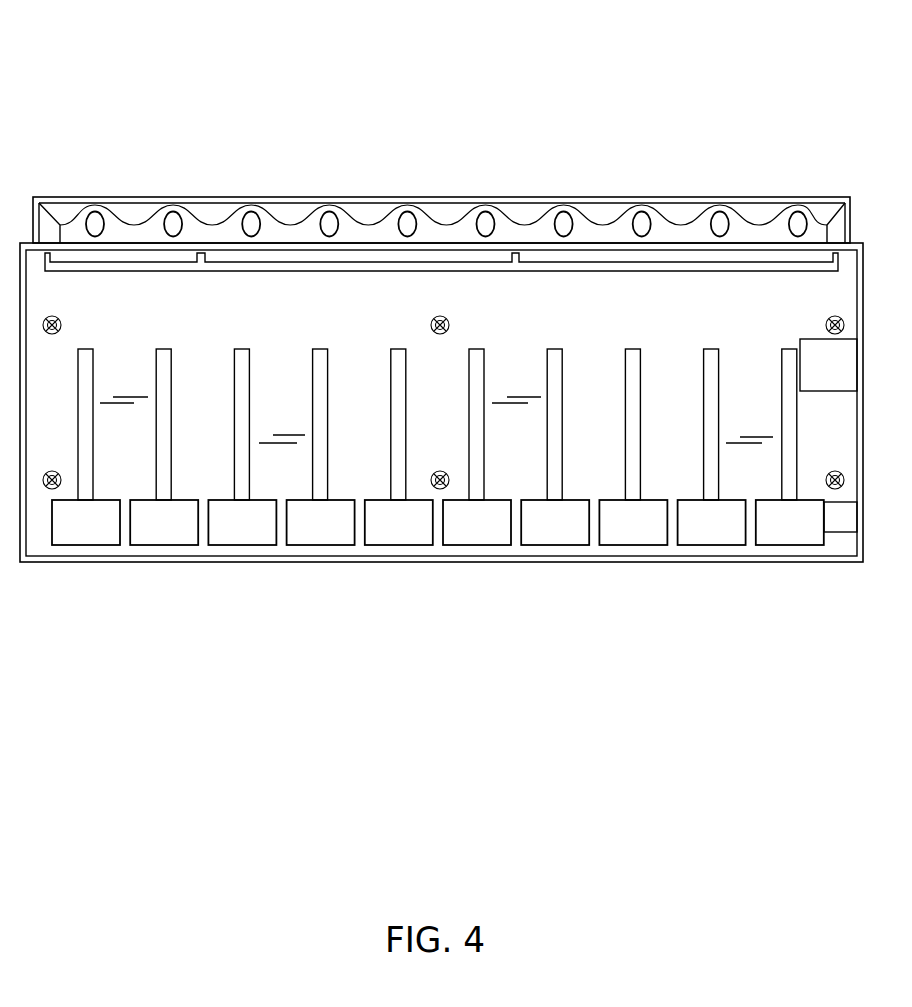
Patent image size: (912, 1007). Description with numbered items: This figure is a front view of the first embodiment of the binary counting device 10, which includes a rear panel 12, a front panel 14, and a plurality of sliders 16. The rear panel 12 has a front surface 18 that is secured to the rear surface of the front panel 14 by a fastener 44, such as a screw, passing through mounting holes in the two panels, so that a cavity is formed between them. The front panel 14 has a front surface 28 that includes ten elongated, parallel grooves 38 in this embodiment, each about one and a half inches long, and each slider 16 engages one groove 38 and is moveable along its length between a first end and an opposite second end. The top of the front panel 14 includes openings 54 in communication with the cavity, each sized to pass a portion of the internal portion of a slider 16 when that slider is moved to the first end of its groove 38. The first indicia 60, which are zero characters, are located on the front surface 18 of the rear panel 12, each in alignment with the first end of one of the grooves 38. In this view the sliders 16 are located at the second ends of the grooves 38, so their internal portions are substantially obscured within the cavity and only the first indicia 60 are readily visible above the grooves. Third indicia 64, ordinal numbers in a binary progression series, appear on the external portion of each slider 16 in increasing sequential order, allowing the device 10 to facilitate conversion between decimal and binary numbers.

The binary counting device 10 is at (178, 142).
The rear panel 12 is at (288, 225).
The front panel 14 is at (503, 305).
The slider 16 is at (258, 545).
The front surface 18 is at (588, 222).
The front surface 28 is at (647, 307).
The groove 38 is at (399, 349).
The fastener 44 is at (437, 492).
The opening 54 is at (73, 243).
The first indicia 60 is at (716, 212).
The third indicia 64 is at (407, 545).